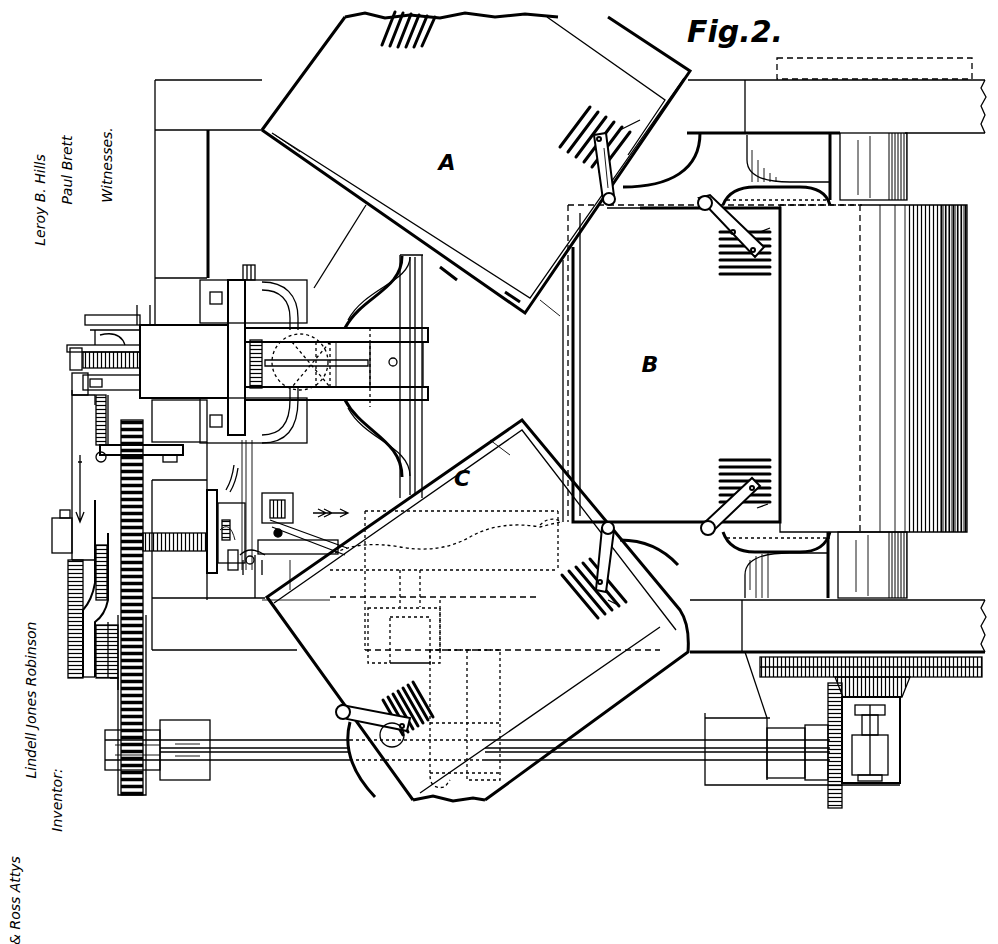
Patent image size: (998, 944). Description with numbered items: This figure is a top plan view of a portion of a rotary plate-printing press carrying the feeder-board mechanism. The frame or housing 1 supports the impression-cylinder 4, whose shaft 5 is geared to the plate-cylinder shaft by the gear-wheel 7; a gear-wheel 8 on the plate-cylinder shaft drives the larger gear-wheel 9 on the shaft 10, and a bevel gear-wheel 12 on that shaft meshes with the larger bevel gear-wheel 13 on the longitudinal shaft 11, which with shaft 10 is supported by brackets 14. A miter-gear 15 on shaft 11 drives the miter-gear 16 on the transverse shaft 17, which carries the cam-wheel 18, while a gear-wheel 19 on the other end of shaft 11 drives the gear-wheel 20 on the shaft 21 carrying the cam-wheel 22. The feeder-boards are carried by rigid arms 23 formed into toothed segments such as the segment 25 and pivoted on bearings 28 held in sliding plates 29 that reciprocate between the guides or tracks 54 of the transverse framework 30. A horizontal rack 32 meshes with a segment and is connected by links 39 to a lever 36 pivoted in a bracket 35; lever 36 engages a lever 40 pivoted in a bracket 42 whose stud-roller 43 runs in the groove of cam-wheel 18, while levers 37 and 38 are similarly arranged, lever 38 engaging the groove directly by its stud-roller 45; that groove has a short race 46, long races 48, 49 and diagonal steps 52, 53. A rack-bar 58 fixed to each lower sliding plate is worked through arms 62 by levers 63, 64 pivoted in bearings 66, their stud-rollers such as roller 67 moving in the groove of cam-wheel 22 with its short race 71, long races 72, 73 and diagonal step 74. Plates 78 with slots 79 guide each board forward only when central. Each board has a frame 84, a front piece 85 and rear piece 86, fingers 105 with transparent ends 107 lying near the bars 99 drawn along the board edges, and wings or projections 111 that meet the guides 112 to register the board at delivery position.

The frame or housing 1 is at (569, 366).
The impression-cylinder 4 is at (873, 368).
The shaft 5 is at (882, 133).
The gear-wheel 7 is at (874, 68).
The gear-wheel 8 is at (900, 657).
The gear-wheel 9 is at (935, 677).
The shaft 10 is at (880, 737).
The shaft 11 is at (268, 740).
The bevel gear-wheel 12 is at (905, 695).
The bevel gear-wheel 13 is at (828, 704).
The brackets 14 is at (888, 753).
The miter-gear 15 is at (465, 719).
The miter-gear 16 is at (438, 720).
The transverse shaft 17 is at (423, 430).
The cam-wheel 18 is at (330, 502).
The gear-wheel 19 is at (121, 712).
The gear-wheel 20 is at (143, 618).
The shaft 21 is at (50, 531).
The cam-wheel 22 is at (72, 500).
The rigid arms 23 is at (507, 352).
The toothed segment 25 is at (262, 370).
The bearing 28 is at (394, 372).
The sliding plates 29 is at (368, 306).
The transverse framework 30 is at (238, 348).
The horizontal rack 32 is at (256, 276).
The brackets 35 is at (210, 507).
The lever 36 is at (253, 574).
The lever 37 is at (222, 552).
The lever 38 is at (232, 570).
The links 39 is at (256, 470).
The lever 40 is at (310, 545).
The brackets 42 is at (290, 500).
The stud-roller 43 is at (338, 575).
The stud-roller 45 is at (270, 610).
The short central straight race 46 is at (100, 554).
The long straight race 48 is at (552, 525).
The long straight race 49 is at (461, 580).
The diagonal step 52 is at (447, 538).
The diagonal step 53 is at (444, 587).
The longitudinal guide or track 54 is at (332, 328).
The rack-bar 58 is at (68, 358).
The arms 62 is at (70, 350).
The lever 63 is at (72, 390).
The lever 64 is at (95, 335).
The bearings 66 is at (110, 315).
The stud-roller 67 is at (76, 460).
The short straight race 71 is at (105, 572).
The long straight race 72 is at (104, 678).
The long straight race 73 is at (97, 528).
The diagonal step 74 is at (107, 636).
The plates 78 is at (346, 364).
The slot 79 is at (311, 364).
The frame of the board 84 is at (290, 150).
The front piece 85 is at (606, 370).
The rear piece 86 is at (562, 407).
The grate bars 99 is at (634, 125).
The fingers 105 is at (601, 185).
The transparent or semitransparent end 107 is at (575, 438).
The wings or projections 111 is at (345, 778).
The guides 112 is at (787, 365).